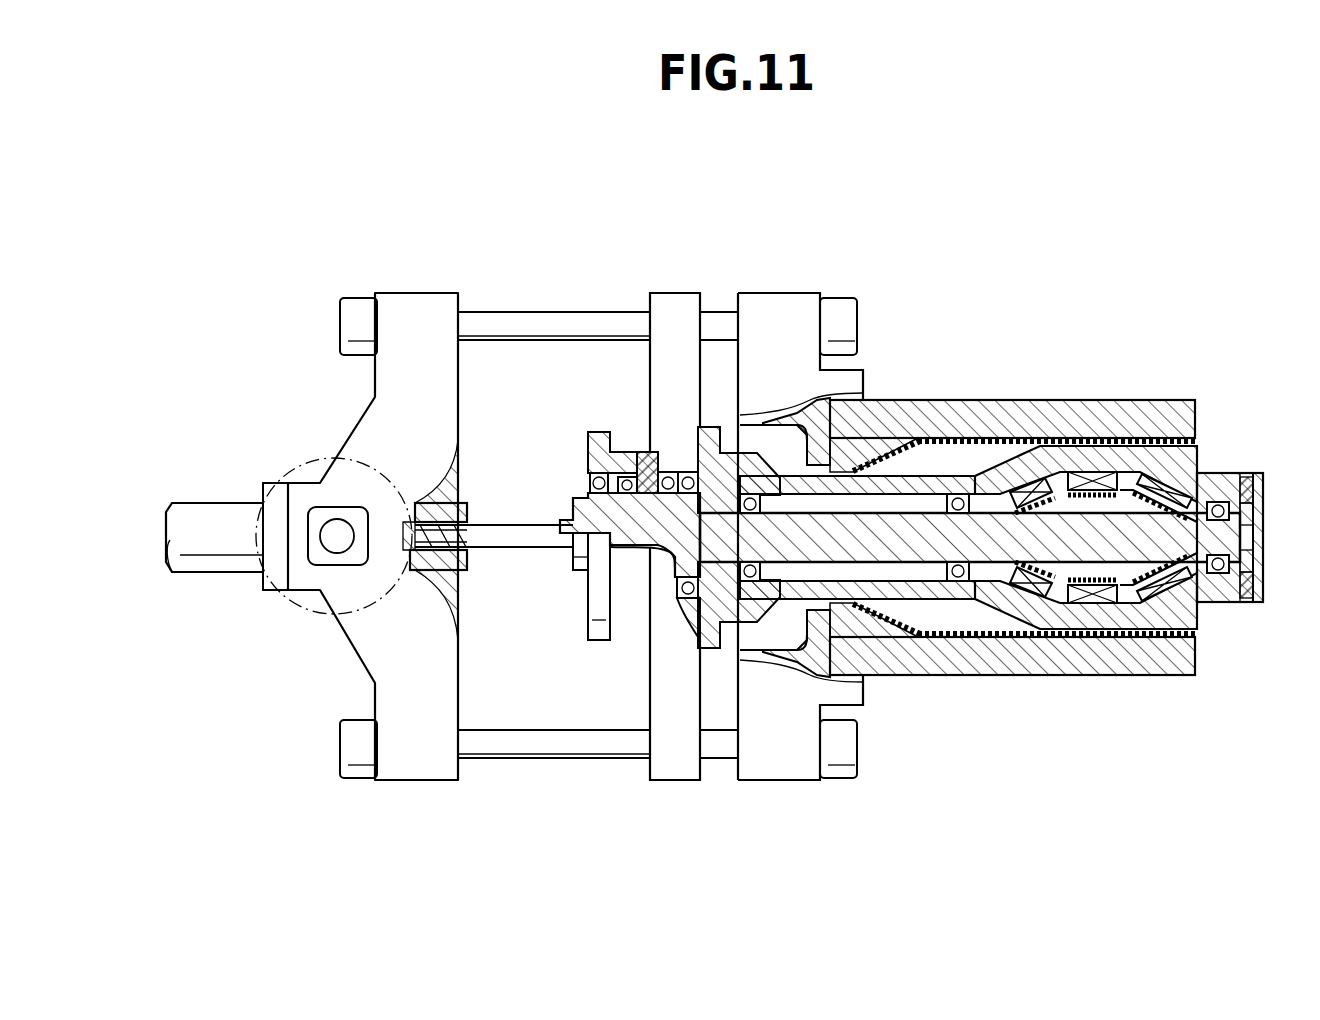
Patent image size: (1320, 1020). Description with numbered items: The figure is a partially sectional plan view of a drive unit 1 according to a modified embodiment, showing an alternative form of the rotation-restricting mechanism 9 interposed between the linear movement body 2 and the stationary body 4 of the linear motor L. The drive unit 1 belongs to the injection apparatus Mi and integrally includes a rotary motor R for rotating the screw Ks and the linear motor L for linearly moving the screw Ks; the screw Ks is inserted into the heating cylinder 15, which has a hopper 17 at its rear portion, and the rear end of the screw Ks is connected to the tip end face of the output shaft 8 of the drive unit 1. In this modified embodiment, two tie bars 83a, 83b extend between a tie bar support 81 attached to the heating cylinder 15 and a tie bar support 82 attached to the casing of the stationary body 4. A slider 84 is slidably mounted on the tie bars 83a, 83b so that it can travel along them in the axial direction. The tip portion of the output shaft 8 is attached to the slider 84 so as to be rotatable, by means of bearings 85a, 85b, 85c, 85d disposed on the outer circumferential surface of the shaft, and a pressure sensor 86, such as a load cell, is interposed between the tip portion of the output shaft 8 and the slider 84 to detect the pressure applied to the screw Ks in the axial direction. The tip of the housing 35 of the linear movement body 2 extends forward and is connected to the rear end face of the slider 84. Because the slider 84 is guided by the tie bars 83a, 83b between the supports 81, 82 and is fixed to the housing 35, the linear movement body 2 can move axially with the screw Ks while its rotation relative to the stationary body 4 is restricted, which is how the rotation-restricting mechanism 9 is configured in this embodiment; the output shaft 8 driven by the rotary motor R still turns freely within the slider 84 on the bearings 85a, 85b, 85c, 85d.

The tie bar support 81 is at (428, 292).
The tie bar support 82 is at (787, 782).
The tie bar 83a is at (548, 312).
The tie bar 83b is at (515, 760).
The slider 84 is at (668, 292).
The bearing 85a is at (597, 470).
The bearing 85b is at (627, 478).
The bearing 85c is at (700, 440).
The bearing 85d is at (700, 412).
The pressure sensor 86 is at (650, 448).
The rotation-restricting mechanism 9 is at (713, 280).
The injection apparatus Mi is at (962, 272).
The drive unit 1 is at (1097, 385).
The linear motor L is at (1182, 395).
The housing 35 is at (937, 470).
The linear movement body 2 is at (1200, 455).
The rotary motor R is at (1205, 618).
The stationary body 4 is at (1088, 673).
The output shaft 8 is at (902, 565).
The screw Ks is at (500, 548).
The heating cylinder 15 is at (205, 503).
The hopper 17 is at (305, 607).